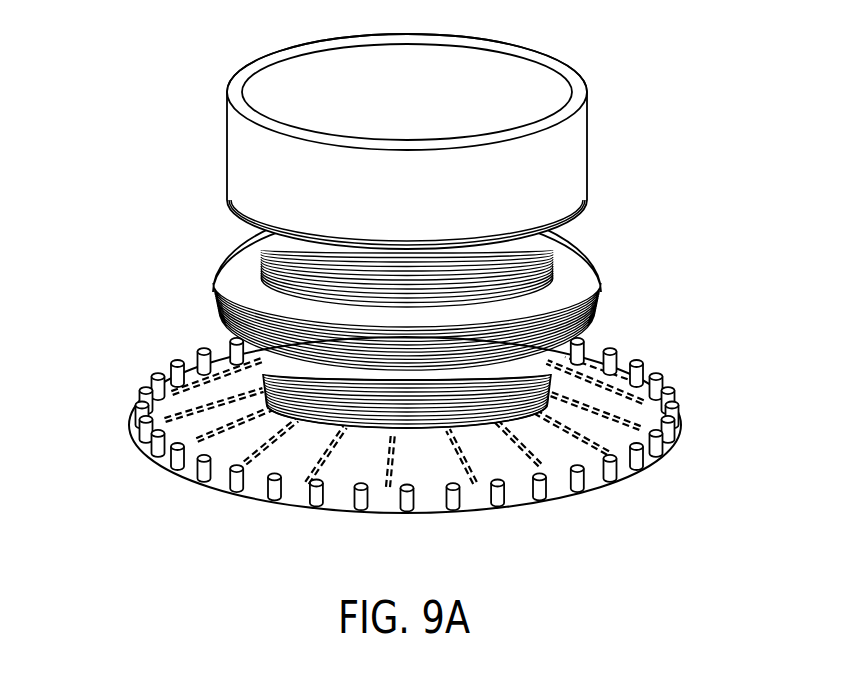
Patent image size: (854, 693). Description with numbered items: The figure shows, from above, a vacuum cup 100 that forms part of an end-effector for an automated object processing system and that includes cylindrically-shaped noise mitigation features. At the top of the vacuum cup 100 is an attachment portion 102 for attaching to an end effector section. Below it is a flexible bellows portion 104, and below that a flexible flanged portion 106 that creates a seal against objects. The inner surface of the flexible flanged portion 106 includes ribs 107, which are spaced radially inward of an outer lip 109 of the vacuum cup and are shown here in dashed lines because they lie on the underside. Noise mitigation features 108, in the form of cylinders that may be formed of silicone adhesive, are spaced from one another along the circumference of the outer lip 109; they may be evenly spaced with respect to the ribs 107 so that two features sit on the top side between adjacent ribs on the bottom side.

The vacuum cup 100 is at (118, 87).
The attachment portion 102 is at (587, 97).
The flexible bellows portion 104 is at (602, 285).
The flexible flanged portion 106 is at (628, 392).
The ribs 107 is at (388, 488).
The noise mitigation features 108 is at (673, 430).
The outer lip 109 is at (630, 478).